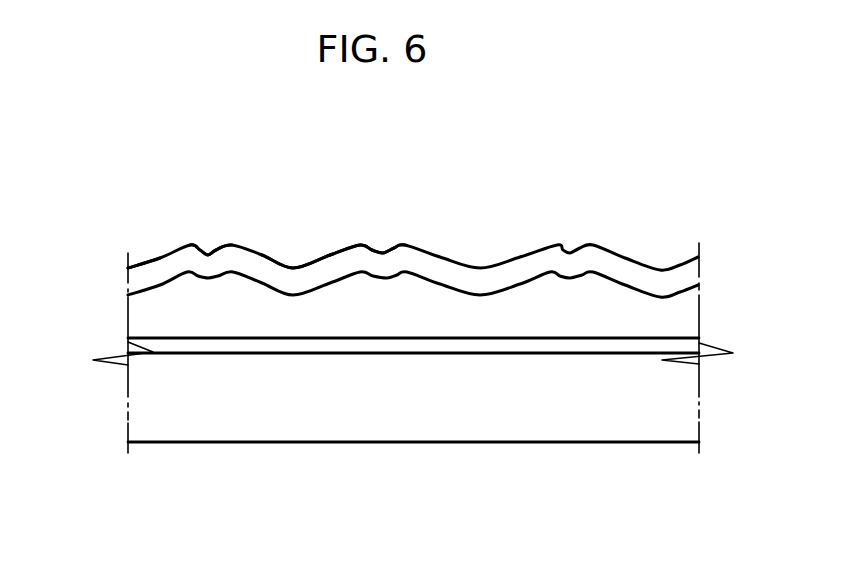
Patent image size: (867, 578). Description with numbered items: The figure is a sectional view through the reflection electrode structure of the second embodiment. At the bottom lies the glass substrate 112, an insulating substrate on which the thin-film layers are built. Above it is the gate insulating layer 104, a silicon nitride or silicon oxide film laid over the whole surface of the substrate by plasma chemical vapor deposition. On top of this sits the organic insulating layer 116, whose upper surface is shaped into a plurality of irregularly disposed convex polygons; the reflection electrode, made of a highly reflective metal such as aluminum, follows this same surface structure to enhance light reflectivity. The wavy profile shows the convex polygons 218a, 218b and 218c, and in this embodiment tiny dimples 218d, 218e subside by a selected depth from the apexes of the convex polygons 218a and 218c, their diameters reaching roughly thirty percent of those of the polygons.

The gate insulating layer 104 is at (447, 347).
The glass substrate 112 is at (290, 417).
The organic insulating layer 116 is at (613, 312).
The convex polygon 218a is at (142, 277).
The second uneven portion 218b is at (297, 268).
The convex polygon 218c is at (362, 247).
The dimple 218d is at (212, 250).
The dimple 218e is at (383, 250).